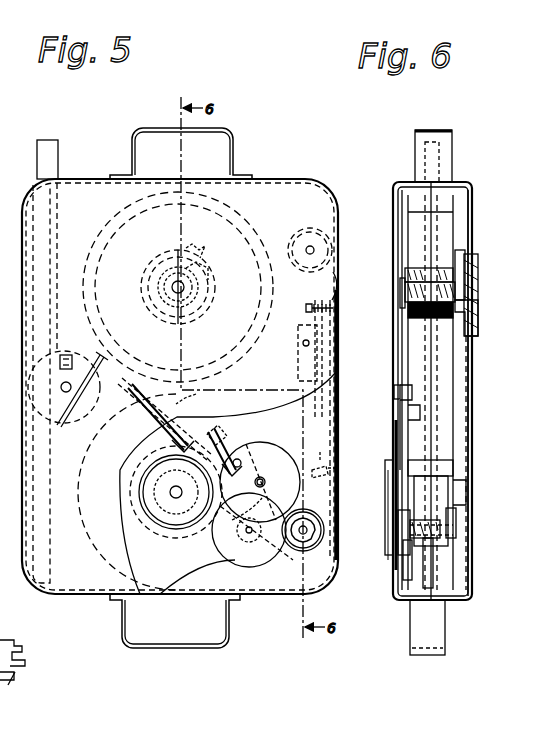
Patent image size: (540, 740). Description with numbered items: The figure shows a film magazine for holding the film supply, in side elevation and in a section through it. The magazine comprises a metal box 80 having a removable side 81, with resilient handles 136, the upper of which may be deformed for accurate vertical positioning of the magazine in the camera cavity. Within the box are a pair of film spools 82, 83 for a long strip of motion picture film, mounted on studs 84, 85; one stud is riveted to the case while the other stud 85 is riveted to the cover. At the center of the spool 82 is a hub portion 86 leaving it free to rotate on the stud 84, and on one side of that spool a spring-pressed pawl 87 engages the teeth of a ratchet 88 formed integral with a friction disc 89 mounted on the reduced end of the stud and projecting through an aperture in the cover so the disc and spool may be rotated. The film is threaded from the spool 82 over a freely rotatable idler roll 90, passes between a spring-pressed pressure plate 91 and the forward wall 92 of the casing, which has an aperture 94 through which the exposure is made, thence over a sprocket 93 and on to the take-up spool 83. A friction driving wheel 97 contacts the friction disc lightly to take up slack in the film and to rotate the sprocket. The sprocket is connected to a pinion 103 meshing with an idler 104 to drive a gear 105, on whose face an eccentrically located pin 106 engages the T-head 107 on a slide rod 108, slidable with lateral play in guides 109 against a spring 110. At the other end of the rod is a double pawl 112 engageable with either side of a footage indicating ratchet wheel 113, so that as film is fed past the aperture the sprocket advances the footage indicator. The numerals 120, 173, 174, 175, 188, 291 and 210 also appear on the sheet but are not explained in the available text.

In FIG. 5, the metal box 80 is at (282, 180).
In FIG. 6, the metal box 80 is at (393, 216).
In FIG. 6, the removable side 81 is at (470, 222).
In FIG. 5, the film spool 82 is at (273, 232).
In FIG. 6, the film spool 82 is at (408, 244).
In FIG. 5, the film spool 83 is at (98, 550).
In FIG. 6, the film spool 83 is at (404, 426).
In FIG. 5, the stud 84 is at (152, 308).
In FIG. 6, the stud 84 is at (410, 298).
In FIG. 5, the stud 85 is at (176, 500).
In FIG. 6, the stud 85 is at (458, 500).
In FIG. 6, the hub portion 86 is at (412, 314).
In FIG. 5, the spring-pressed pawl 87 is at (176, 252).
In FIG. 6, the spring-pressed pawl 87 is at (466, 262).
In FIG. 5, the ratchet 88 is at (207, 270).
In FIG. 6, the ratchet 88 is at (474, 330).
In FIG. 5, the friction disc 89 is at (142, 286).
In FIG. 6, the friction disc 89 is at (478, 278).
In FIG. 5, the idler roll 90 is at (310, 226).
In FIG. 5, the spring-pressed pressure plate 91 is at (300, 362).
In FIG. 6, the forward wall 92 is at (406, 278).
In FIG. 5, the sprocket 93 is at (320, 562).
In FIG. 6, the sprocket 93 is at (400, 548).
In FIG. 6, the aperture 94 is at (394, 392).
In FIG. 6, the friction driving wheel 97 is at (383, 532).
In FIG. 6, the pinion 103 is at (368, 540).
In FIG. 5, the idler 104 is at (272, 563).
In FIG. 6, the idler 104 is at (404, 570).
In FIG. 5, the gear 105 is at (282, 438).
In FIG. 6, the gear 105 is at (410, 472).
In FIG. 5, the eccentrically located pin 106 is at (241, 463).
In FIG. 5, the T-head 107 is at (225, 436).
In FIG. 5, the slide rod 108 is at (188, 426).
In FIG. 6, the slide rod 108 is at (406, 411).
In FIG. 5, the guides 109 is at (146, 370).
In FIG. 6, the guides 109 is at (398, 392).
In FIG. 5, the spring 110 is at (150, 430).
In FIG. 5, the double pawl 112 is at (68, 420).
In FIG. 5, the footage indicating ratchet wheel 113 is at (92, 355).
In FIG. 5, the winding knob 120 is at (59, 160).
In FIG. 6, the winding knob 120 is at (428, 196).
In FIG. 5, the resilient handles 136 is at (236, 164).
In FIG. 6, the resilient handles 136 is at (415, 145).
In FIG. 5, the slot 173 is at (11, 325).
In FIG. 5, the lead wire 174 is at (62, 364).
In FIG. 5, the side strip 175 is at (28, 383).
In FIG. 5, the fragment 188 is at (12, 639).
In FIG. 5, the fragment 291 is at (20, 660).
In FIG. 5, the fragment 210 is at (16, 676).